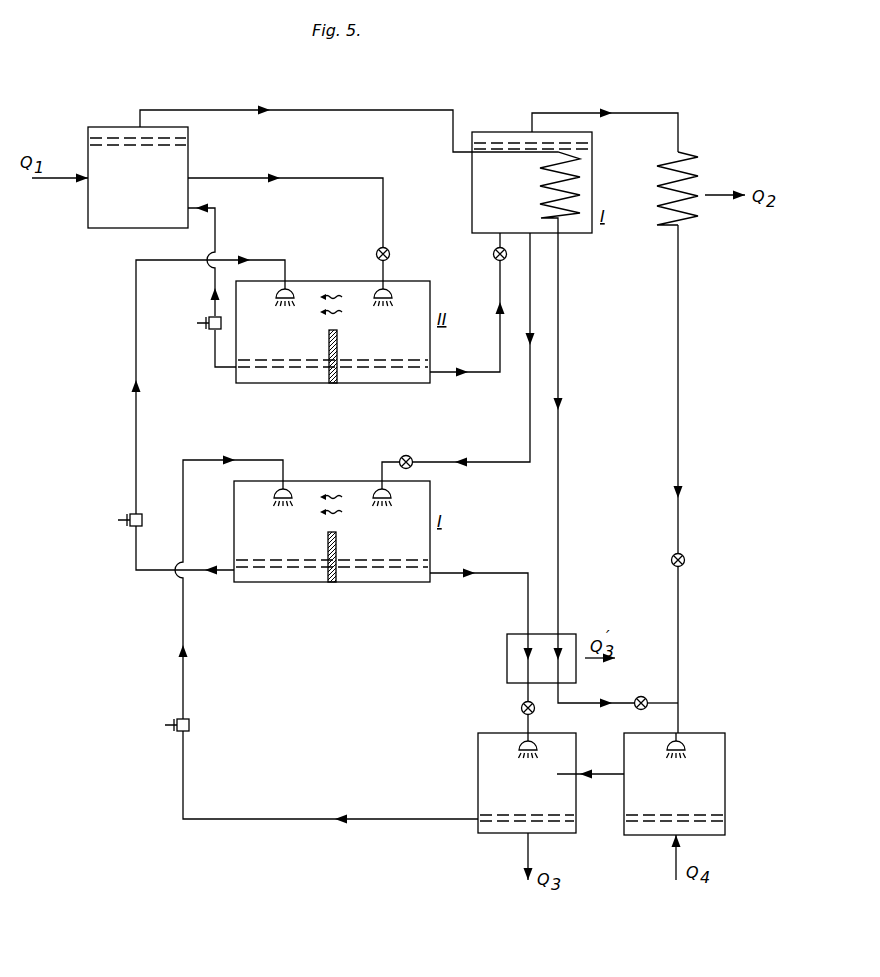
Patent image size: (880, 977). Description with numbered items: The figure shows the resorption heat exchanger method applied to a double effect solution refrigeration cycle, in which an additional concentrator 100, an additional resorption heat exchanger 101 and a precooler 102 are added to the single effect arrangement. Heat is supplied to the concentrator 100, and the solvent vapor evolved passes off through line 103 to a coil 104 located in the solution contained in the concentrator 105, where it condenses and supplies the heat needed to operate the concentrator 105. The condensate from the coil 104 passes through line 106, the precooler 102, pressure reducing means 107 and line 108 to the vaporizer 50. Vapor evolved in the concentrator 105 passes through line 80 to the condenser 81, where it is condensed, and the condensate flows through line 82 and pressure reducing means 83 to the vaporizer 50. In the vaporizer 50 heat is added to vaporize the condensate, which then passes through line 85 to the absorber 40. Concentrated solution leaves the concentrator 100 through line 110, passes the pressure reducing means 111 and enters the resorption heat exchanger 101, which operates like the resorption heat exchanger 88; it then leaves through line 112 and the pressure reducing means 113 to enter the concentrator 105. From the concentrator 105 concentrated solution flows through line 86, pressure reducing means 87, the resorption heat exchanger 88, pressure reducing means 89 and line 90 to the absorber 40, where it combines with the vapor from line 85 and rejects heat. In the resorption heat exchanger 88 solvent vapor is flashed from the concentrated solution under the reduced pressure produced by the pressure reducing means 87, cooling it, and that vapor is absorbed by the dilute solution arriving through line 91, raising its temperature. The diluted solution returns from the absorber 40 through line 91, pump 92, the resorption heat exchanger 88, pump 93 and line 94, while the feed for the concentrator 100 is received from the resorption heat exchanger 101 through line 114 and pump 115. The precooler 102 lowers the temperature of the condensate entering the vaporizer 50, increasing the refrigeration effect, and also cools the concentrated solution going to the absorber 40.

The absorber 40 is at (478, 749).
The vaporizer 50 is at (725, 771).
The line 80 is at (590, 114).
The condenser 81 is at (704, 174).
The line 82 is at (680, 373).
The pressure reducing means 83 is at (686, 560).
The line 85 is at (600, 772).
The line 86 is at (528, 433).
The pressure reducing means 87 is at (406, 455).
The resorption heat exchanger 88 is at (284, 583).
The pressure reducing means 89 is at (521, 708).
The line 90 is at (527, 598).
The line 91 is at (262, 816).
The pump 92 is at (192, 724).
The pump 93 is at (128, 527).
The line 94 is at (130, 412).
The concentrator 100 is at (88, 200).
The resorption heat exchanger 101 is at (283, 384).
The precooler 102 is at (507, 645).
The line 103 is at (203, 100).
The coil 104 is at (583, 192).
The concentrator 105 is at (472, 202).
The line 106 is at (560, 478).
The pressure reducing means 107 is at (652, 688).
The line 108 is at (679, 655).
The line 110 is at (318, 168).
The pressure reducing means 111 is at (376, 254).
The line 112 is at (498, 283).
The pressure reducing means 113 is at (493, 254).
The line 114 is at (213, 346).
The pump 115 is at (208, 312).